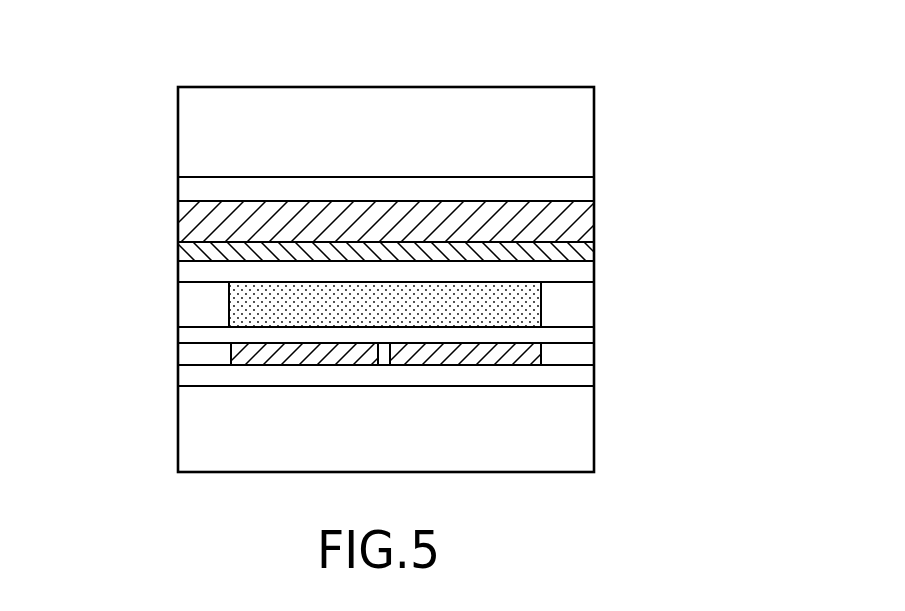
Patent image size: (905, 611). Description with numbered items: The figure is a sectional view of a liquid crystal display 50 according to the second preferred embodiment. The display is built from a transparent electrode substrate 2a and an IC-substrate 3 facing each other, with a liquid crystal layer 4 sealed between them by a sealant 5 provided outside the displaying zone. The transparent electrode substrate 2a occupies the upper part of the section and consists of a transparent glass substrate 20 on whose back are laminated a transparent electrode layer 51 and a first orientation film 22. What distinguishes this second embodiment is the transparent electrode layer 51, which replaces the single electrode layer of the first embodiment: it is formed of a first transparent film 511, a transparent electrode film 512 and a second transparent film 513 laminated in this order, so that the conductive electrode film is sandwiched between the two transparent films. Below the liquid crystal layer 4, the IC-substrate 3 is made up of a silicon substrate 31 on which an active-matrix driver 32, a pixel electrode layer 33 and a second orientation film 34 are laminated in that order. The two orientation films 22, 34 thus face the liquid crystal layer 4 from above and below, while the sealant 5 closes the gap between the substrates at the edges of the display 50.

The liquid crystal display 50 is at (105, 53).
The transparent glass substrate 20 is at (575, 133).
The first transparent film 511 is at (585, 188).
The transparent electrode film 512 is at (585, 215).
The second transparent film 513 is at (585, 253).
The transparent electrode layer 51 is at (705, 157).
The transparent electrode substrate 2a is at (167, 87).
The first orientation film 22 is at (583, 276).
The sealant 5 is at (583, 300).
The liquid crystal layer 4 is at (260, 298).
The second orientation film 34 is at (583, 333).
The pixel electrode layer 33 is at (583, 355).
The active-matrix driver 32 is at (580, 375).
The silicon substrate 31 is at (578, 450).
The IC-substrate 3 is at (130, 338).